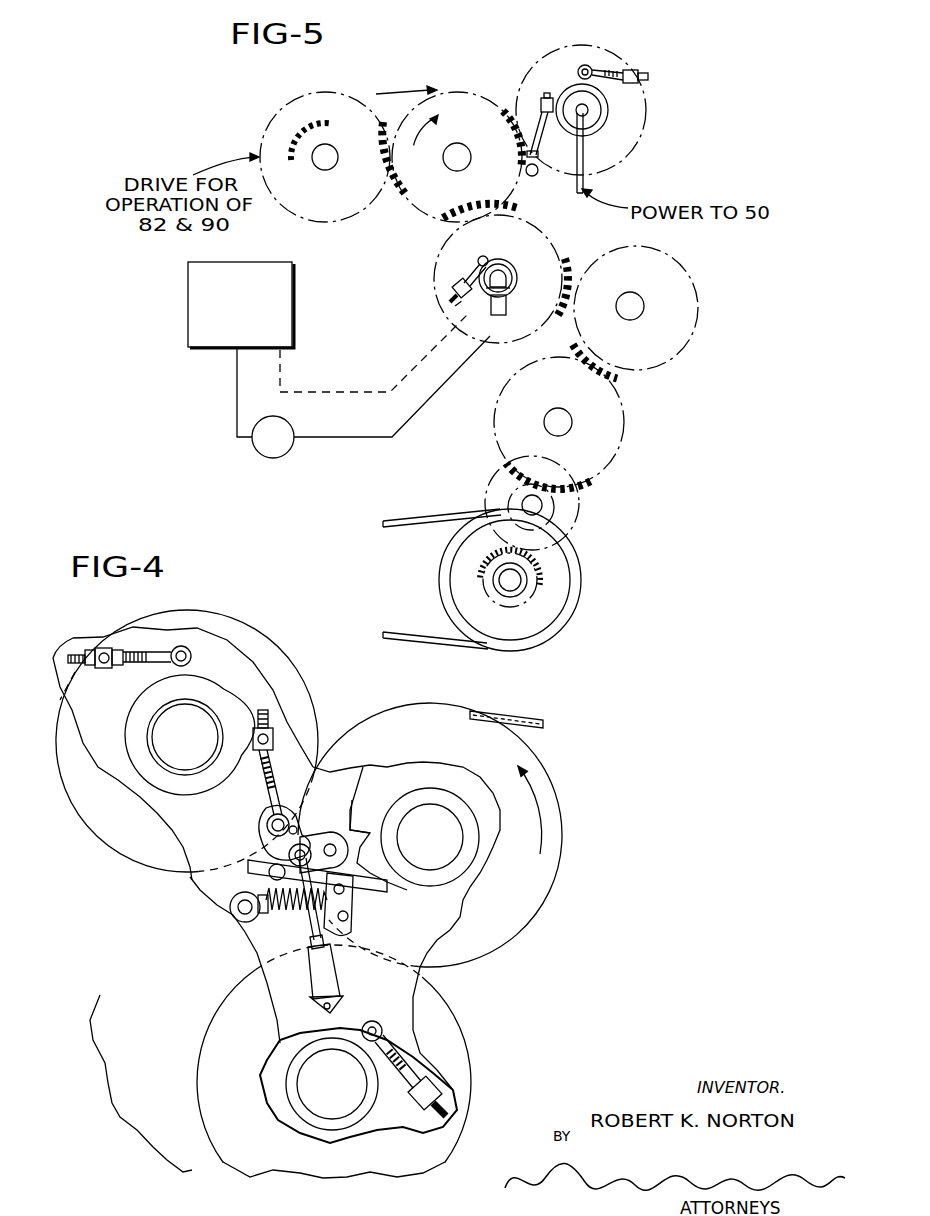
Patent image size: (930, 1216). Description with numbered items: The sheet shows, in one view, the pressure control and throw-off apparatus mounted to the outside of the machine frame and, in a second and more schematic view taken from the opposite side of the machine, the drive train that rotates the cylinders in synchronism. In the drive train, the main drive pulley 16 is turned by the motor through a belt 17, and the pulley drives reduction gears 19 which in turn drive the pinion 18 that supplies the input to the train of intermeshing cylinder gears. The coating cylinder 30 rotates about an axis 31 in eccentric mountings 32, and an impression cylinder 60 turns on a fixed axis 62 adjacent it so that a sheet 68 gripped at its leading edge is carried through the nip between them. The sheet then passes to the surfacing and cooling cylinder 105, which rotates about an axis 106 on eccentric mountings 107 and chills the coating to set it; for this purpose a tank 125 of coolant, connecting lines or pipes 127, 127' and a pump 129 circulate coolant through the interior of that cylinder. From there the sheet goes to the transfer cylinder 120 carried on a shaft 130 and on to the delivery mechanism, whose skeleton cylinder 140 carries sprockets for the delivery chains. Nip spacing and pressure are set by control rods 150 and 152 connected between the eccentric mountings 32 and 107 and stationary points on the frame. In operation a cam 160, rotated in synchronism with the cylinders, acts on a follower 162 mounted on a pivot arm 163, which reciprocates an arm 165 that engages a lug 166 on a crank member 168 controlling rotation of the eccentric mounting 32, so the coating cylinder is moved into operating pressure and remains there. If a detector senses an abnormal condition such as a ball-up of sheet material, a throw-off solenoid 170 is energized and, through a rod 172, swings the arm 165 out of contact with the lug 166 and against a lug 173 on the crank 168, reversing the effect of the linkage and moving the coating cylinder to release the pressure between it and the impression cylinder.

In FIG. 5, the main drive pulley 16 is at (576, 597).
In FIG. 5, the belt 17 is at (412, 635).
In FIG. 5, the pinion 18 is at (515, 493).
In FIG. 5, the reduction gears 19 is at (482, 545).
In FIG. 5, the coating cylinder 30 is at (640, 158).
In FIG. 4, the coating cylinder 30 is at (78, 793).
In FIG. 5, the axis 31 is at (588, 107).
In FIG. 5, the eccentric mountings 32 is at (610, 118).
In FIG. 4, the eccentric mountings 32 is at (201, 694).
In FIG. 5, the impression cylinder 60 is at (462, 81).
In FIG. 4, the impression cylinder 60 is at (532, 771).
In FIG. 5, the fixed axis 62 is at (462, 143).
In FIG. 4, the fixed axis 62 is at (448, 847).
In FIG. 4, the sheet 68 is at (515, 722).
In FIG. 5, the surfacing and cooling cylinder 105 is at (462, 341).
In FIG. 4, the surfacing and cooling cylinder 105 is at (462, 1068).
In FIG. 4, the axis 106 is at (331, 1082).
In FIG. 4, the eccentric mountings 107 is at (343, 1117).
In FIG. 5, the transfer cylinder 120 is at (698, 323).
In FIG. 4, the transfer cylinder 120 is at (132, 1020).
In FIG. 5, the tank 125 is at (197, 323).
In FIG. 5, the connecting lines or pipes 127 is at (496, 319).
In FIG. 5, the follower alternate position 127' is at (423, 313).
In FIG. 5, the pump 129 is at (265, 451).
In FIG. 5, the shaft 130 is at (630, 298).
In FIG. 5, the skeleton cylinder 140 is at (619, 468).
In FIG. 5, the control rod 150 is at (613, 70).
In FIG. 4, the control rod 150 is at (147, 640).
In FIG. 5, the control rod 152 is at (463, 268).
In FIG. 4, the control rod 152 is at (397, 1050).
In FIG. 4, the cam 160 is at (370, 833).
In FIG. 4, the follower 162 is at (361, 778).
In FIG. 4, the pivot arm 163 is at (358, 907).
In FIG. 4, the arm 165 is at (301, 846).
In FIG. 4, the lug 166 is at (250, 877).
In FIG. 4, the crank member 168 is at (263, 833).
In FIG. 4, the throw-off solenoid 170 is at (327, 972).
In FIG. 4, the rod 172 is at (252, 950).
In FIG. 4, the lug 173 is at (273, 787).